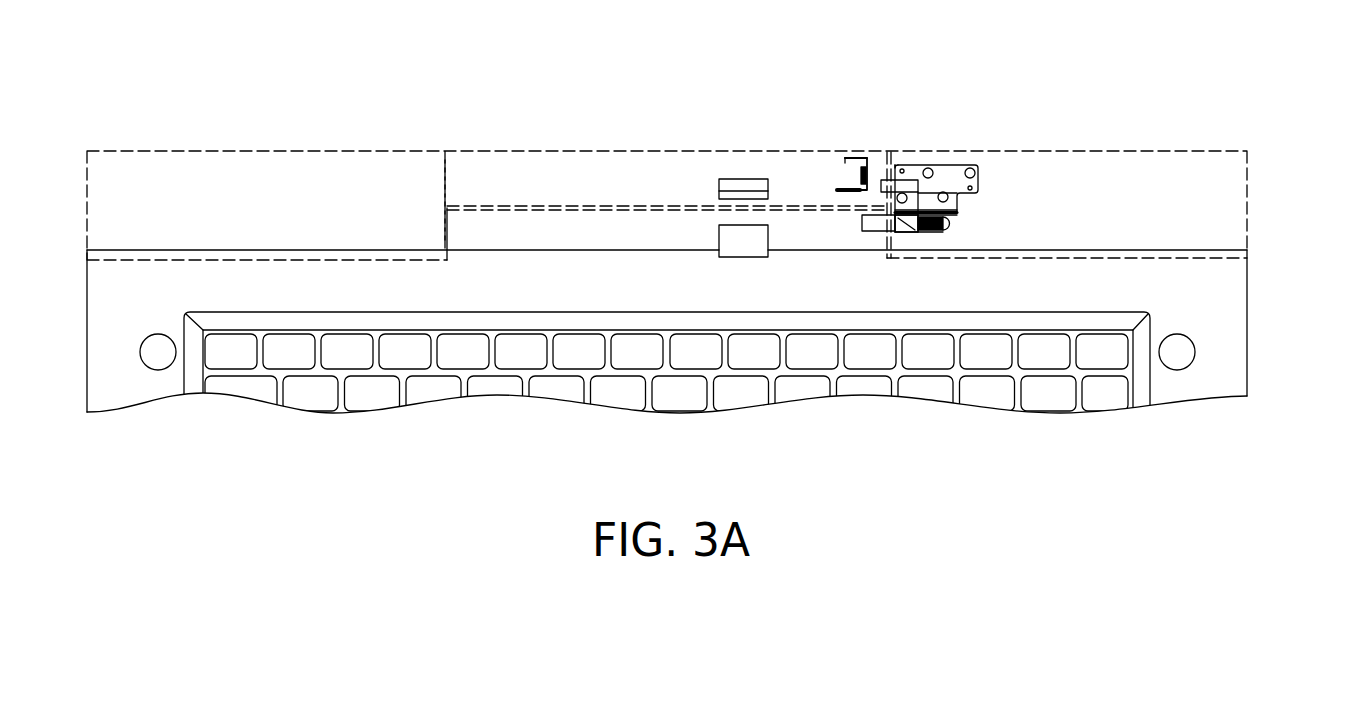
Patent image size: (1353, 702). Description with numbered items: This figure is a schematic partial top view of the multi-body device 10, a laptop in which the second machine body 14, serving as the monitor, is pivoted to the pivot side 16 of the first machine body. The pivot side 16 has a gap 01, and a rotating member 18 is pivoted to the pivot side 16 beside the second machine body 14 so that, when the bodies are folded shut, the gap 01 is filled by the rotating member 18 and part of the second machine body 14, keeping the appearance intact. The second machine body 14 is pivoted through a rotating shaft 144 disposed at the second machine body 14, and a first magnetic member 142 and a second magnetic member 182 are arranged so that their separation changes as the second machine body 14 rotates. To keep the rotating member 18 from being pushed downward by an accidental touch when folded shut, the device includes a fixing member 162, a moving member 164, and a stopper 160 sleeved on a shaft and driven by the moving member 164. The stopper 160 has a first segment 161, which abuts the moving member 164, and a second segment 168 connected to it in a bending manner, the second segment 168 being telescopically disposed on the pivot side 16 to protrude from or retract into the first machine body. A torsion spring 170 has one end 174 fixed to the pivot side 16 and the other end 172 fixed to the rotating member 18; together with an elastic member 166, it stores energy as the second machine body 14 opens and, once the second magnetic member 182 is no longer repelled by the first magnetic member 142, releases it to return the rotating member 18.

The gap 01 is at (443, 189).
The multi-body device 10 is at (1248, 340).
The second machine body 14 is at (1248, 306).
The pivot side 16 is at (1248, 186).
The rotating member 18 is at (776, 152).
The first magnetic member 142 is at (742, 242).
The rotating shaft 144 is at (876, 224).
The stopper 160 is at (948, 184).
The first segment 161 is at (922, 200).
The fixing member 162 is at (956, 166).
The moving member 164 is at (905, 222).
The elastic member 166 is at (936, 226).
The second segment 168 is at (882, 180).
The torsion spring 170 is at (866, 166).
The other end 172 is at (837, 189).
The one end 174 is at (845, 158).
The second magnetic member 182 is at (737, 183).